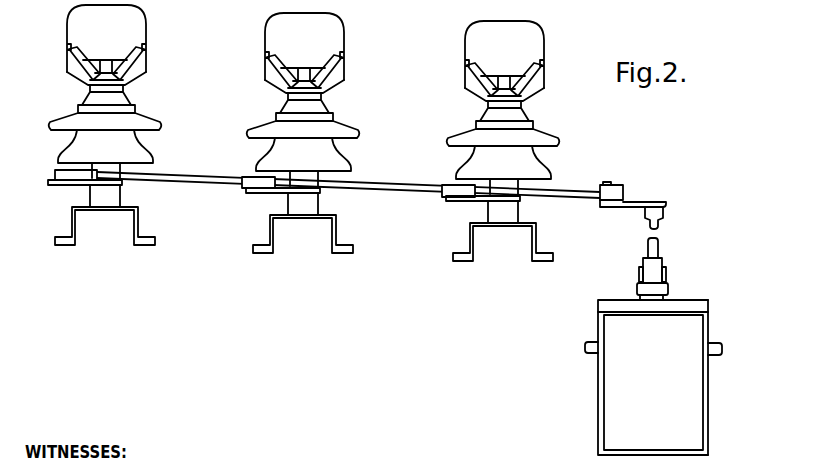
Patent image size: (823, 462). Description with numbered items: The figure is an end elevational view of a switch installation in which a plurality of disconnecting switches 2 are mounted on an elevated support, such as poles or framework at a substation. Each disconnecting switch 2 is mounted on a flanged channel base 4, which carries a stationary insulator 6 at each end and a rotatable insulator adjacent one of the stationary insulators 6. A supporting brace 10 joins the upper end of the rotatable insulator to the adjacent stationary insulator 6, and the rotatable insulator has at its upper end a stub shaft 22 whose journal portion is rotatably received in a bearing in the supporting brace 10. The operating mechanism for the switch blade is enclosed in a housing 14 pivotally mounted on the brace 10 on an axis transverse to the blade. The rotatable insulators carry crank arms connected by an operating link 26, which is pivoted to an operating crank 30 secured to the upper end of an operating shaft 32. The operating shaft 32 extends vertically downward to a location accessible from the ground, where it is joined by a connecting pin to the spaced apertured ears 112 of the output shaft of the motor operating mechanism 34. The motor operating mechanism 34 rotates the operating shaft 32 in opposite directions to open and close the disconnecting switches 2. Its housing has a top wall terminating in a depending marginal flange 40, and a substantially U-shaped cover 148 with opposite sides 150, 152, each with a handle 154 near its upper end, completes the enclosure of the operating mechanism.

The disconnecting switch 2 is at (50, 40).
The flanged channel base 4 is at (72, 218).
The stationary insulator 6 is at (65, 152).
The supporting brace 10 is at (70, 75).
The housing 14 is at (75, 14).
The stub shaft 22 is at (73, 66).
The operating link 26 is at (378, 189).
The operating crank 30 is at (633, 202).
The operating shaft 32 is at (660, 247).
The motor operating mechanism 34 is at (665, 383).
The depending marginal flange 40 is at (697, 303).
The apertured ears 112 is at (643, 273).
The cover 148 is at (607, 423).
The side of cover 150 is at (600, 392).
The side of cover 152 is at (708, 420).
The handles 154 is at (585, 344).